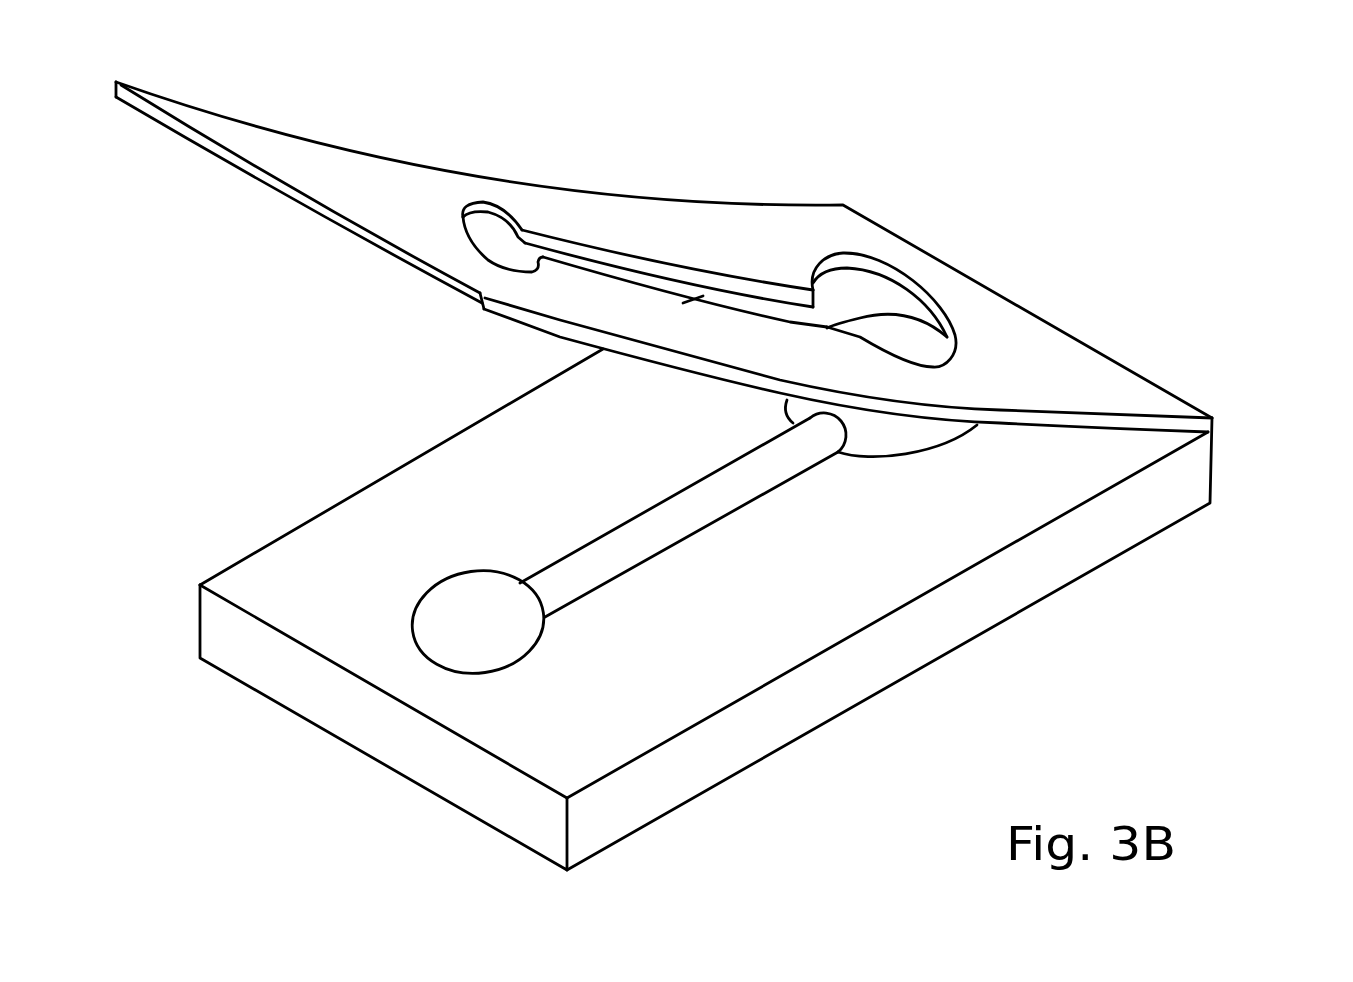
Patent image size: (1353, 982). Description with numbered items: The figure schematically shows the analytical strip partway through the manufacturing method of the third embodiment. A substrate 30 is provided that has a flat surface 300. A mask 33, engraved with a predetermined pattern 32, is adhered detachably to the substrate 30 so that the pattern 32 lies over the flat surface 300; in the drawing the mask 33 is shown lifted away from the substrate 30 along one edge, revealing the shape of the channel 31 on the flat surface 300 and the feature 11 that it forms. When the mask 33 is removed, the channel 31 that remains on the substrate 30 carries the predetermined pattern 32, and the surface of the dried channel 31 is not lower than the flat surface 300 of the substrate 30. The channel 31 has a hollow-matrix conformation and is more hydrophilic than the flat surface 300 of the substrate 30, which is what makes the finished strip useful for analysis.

The key pin 11 is at (572, 553).
The substrate 30 is at (772, 609).
The flat surface 300 is at (1188, 475).
The channel 31 is at (636, 257).
The predetermined pattern 32 is at (620, 268).
The mask 33 is at (207, 140).